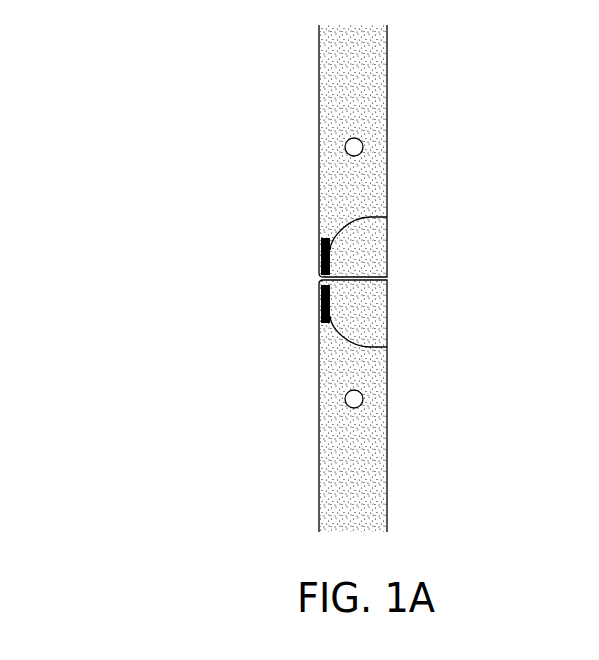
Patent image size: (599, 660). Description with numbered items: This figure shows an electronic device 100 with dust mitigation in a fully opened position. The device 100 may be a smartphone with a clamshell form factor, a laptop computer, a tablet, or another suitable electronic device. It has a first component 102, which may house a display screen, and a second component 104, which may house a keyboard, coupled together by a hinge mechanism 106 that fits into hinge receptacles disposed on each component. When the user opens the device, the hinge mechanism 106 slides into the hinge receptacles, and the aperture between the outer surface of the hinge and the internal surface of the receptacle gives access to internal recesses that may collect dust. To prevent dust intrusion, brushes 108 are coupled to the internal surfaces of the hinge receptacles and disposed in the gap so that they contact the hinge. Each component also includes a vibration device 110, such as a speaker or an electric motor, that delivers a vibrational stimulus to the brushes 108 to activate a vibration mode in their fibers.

The electronic device 100 is at (155, 55).
The first component 102 is at (387, 52).
The second component 104 is at (387, 488).
The hinge mechanism 106 is at (373, 216).
The brushes 108 is at (306, 258).
The vibration device 110 is at (363, 145).